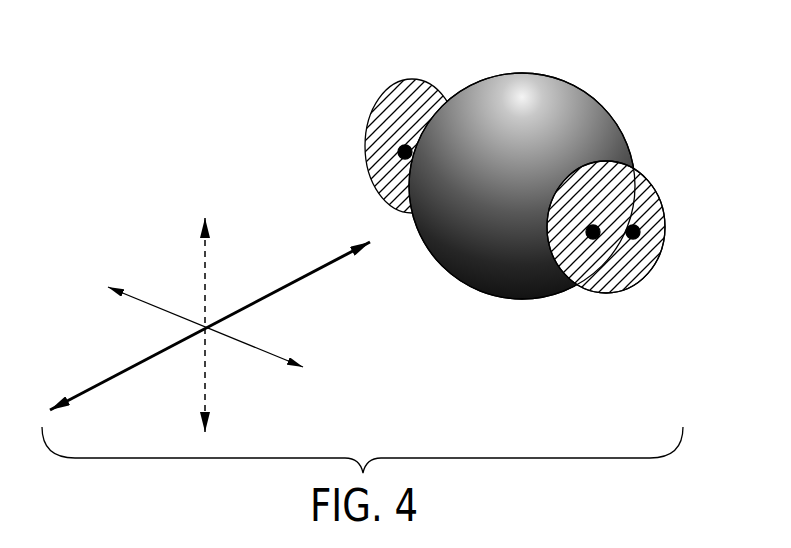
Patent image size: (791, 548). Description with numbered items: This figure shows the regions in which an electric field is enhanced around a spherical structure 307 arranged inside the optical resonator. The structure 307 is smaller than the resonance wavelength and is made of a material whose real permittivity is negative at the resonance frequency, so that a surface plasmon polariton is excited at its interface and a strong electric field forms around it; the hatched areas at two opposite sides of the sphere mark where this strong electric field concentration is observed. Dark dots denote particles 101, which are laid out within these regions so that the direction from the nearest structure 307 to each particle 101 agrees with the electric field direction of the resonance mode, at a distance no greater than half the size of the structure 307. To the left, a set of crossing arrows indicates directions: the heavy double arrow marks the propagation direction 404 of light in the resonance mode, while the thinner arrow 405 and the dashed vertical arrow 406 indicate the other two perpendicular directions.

The particle 101 is at (596, 236).
The structure 307 is at (478, 292).
The propagation direction 404 is at (110, 382).
The second rotation axis direction 405 is at (260, 352).
The third rotation axis direction 406 is at (203, 259).